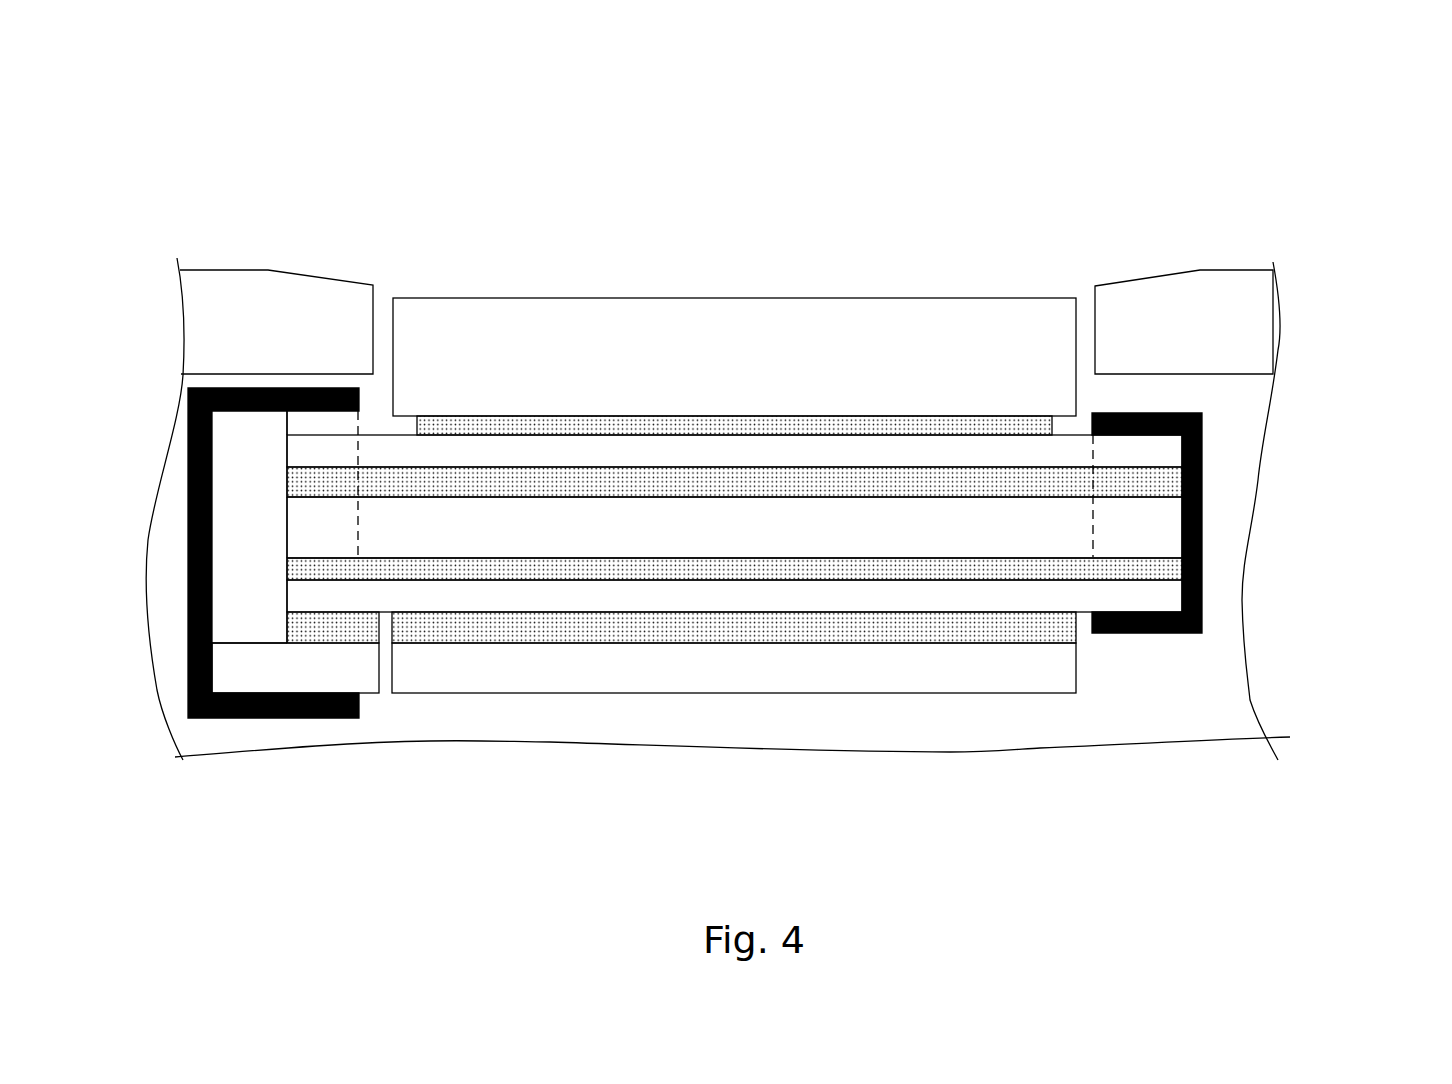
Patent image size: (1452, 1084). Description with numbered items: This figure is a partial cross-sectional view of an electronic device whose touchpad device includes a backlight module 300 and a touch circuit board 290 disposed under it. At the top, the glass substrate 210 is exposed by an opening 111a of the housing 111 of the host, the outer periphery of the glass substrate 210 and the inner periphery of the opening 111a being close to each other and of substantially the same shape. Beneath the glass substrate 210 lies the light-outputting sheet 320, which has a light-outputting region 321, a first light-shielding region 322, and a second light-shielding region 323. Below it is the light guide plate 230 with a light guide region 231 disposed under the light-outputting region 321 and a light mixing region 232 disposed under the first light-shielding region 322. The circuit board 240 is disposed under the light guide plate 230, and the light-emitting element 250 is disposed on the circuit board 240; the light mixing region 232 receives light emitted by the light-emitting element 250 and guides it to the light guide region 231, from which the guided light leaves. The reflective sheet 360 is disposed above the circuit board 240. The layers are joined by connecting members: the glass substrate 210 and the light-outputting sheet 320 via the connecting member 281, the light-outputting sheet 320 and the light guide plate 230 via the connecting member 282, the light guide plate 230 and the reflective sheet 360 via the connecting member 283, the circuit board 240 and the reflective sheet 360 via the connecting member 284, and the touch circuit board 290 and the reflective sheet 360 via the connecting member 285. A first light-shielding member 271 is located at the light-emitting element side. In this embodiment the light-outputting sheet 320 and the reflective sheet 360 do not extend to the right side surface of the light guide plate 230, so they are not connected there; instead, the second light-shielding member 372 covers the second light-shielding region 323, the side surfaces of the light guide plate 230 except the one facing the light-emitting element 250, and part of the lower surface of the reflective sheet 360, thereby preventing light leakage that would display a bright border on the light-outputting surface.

The housing 111 is at (1217, 313).
The opening 111a is at (1090, 262).
The glass substrate 210 is at (732, 312).
The light guide plate 230 is at (1387, 147).
The light guide region 231 is at (1165, 535).
The light mixing region 232 is at (293, 525).
The circuit board 240 is at (223, 664).
The light-emitting element 250 is at (225, 557).
The first light-shielding member 271 is at (188, 470).
The connecting member 281 is at (507, 428).
The connecting member 282 is at (617, 485).
The connecting member 283 is at (295, 573).
The connecting member 284 is at (293, 623).
The connecting member 285 is at (600, 628).
The touch circuit board 290 is at (737, 678).
The backlight module 300 is at (896, 742).
The light-outputting sheet 320 is at (1387, 43).
The light-outputting region 321 is at (835, 450).
The first light-shielding region 322 is at (330, 448).
The second light-shielding region 323 is at (1168, 447).
The reflective sheet 360 is at (1165, 592).
The second light-shielding member 372 is at (1202, 498).